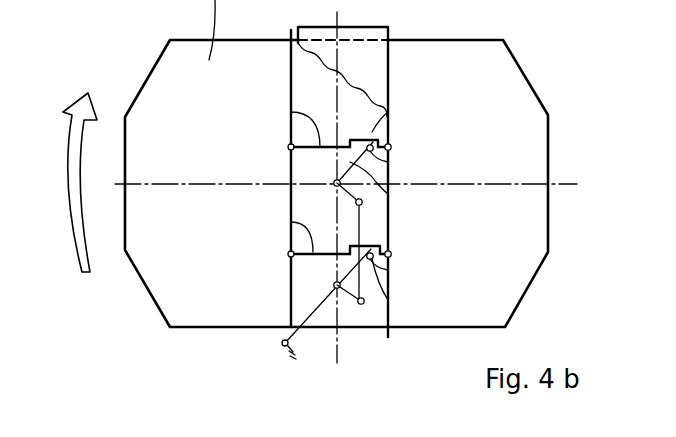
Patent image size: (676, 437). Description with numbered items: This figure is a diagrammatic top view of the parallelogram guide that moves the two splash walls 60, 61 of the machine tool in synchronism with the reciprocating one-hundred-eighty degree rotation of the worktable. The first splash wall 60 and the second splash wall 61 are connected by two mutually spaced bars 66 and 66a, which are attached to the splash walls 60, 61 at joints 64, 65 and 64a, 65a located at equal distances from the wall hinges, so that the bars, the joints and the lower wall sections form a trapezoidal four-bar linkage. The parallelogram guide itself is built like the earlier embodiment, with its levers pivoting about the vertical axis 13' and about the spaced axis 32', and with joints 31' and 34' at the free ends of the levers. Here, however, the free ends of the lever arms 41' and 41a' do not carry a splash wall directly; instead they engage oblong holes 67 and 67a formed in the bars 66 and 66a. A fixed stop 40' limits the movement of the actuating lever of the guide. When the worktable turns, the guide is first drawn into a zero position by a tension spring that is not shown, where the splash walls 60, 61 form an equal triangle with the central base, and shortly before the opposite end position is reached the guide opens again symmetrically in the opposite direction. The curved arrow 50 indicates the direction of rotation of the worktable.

The first splash wall 60 is at (290, 58).
The second splash wall 61 is at (383, 58).
The bar 66a is at (291, 112).
The oblong hole 67a is at (388, 108).
The joint 64a is at (291, 146).
The joint 65a is at (390, 147).
The vertical axis 13' is at (302, 164).
The joint 31' is at (405, 161).
The lever arm 41a' is at (395, 231).
The bar 66 is at (291, 222).
The oblong hole 67 is at (379, 245).
The joint 64 is at (291, 254).
The joint 65 is at (390, 254).
The axis 32' is at (296, 296).
The joint 34' is at (405, 267).
The lever arm 41' is at (385, 286).
The fixed stop 40' is at (308, 363).
The direction of rotation arrow 50 is at (72, 209).